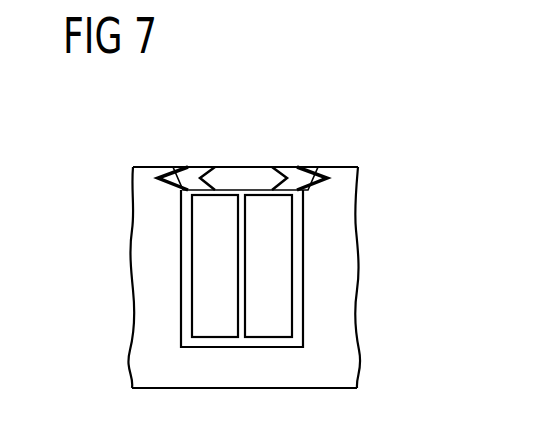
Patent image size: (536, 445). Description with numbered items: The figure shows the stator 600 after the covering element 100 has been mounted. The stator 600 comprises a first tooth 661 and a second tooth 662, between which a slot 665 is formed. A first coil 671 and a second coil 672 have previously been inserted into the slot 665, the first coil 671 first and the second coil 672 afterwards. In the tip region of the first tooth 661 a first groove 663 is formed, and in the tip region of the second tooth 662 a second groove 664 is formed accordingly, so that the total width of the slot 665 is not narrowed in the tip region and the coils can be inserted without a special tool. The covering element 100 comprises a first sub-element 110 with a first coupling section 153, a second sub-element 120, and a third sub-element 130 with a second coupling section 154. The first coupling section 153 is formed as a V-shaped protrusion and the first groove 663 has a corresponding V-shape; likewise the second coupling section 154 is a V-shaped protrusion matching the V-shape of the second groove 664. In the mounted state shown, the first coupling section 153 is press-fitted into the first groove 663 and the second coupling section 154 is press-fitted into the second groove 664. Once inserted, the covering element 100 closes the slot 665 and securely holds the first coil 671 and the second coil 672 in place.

The covering element 100 is at (225, 136).
The first sub-element 110 is at (160, 178).
The second sub-element 120 is at (250, 167).
The third sub-element 130 is at (340, 180).
The first coupling section 153 is at (188, 167).
The second coupling section 154 is at (292, 167).
The stator 600 is at (376, 141).
The first tooth 661 is at (147, 240).
The second tooth 662 is at (347, 220).
The first groove 663 is at (162, 167).
The second groove 664 is at (320, 167).
The slot 665 is at (297, 273).
The first coil 671 is at (212, 302).
The second coil 672 is at (275, 320).